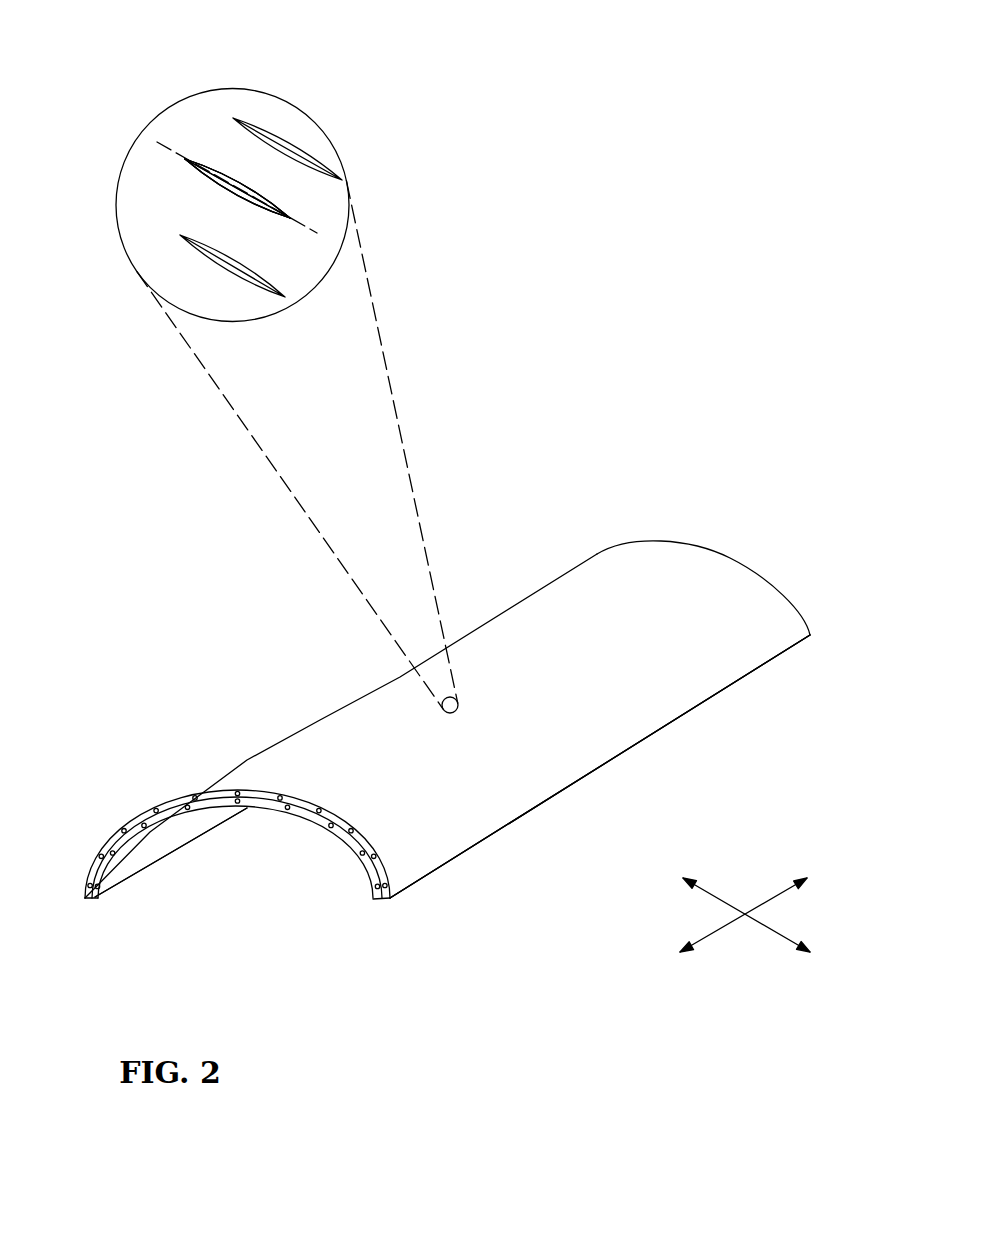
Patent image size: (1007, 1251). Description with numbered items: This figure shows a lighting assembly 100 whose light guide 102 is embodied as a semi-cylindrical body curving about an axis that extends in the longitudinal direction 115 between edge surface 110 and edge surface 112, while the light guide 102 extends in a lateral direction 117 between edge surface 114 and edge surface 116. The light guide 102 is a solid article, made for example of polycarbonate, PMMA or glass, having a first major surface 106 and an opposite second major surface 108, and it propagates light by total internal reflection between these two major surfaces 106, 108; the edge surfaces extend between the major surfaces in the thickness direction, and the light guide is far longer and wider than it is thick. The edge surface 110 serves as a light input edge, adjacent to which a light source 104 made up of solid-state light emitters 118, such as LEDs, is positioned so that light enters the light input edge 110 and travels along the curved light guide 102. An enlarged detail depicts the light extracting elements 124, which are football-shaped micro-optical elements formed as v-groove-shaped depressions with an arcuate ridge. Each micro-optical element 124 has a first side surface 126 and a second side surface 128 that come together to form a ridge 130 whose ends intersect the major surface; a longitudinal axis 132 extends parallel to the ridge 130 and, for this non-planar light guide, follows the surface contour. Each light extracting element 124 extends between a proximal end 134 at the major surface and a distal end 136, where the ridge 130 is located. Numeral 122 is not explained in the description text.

The lighting assembly 100 is at (262, 703).
The light guide 102 is at (418, 835).
The light source 104 is at (284, 821).
The first major surface 106 is at (645, 703).
The second major surface 108 is at (150, 847).
The edge surface 110 is at (343, 823).
The edge surface 112 is at (730, 558).
The edge surface 114 is at (553, 797).
The longitudinal direction 115 is at (710, 933).
The edge surface 116 is at (190, 843).
The lateral direction 117 is at (713, 897).
The solid-state light emitter 118 is at (371, 899).
The left tip 122 is at (107, 860).
The light extracting element 124 is at (195, 172).
The first side surface 126 is at (240, 197).
The second side surface 128 is at (236, 182).
The ridge 130 is at (255, 197).
The longitudinal axis 132 is at (317, 233).
The proximal end 134 is at (214, 205).
The distal end 136 is at (214, 160).